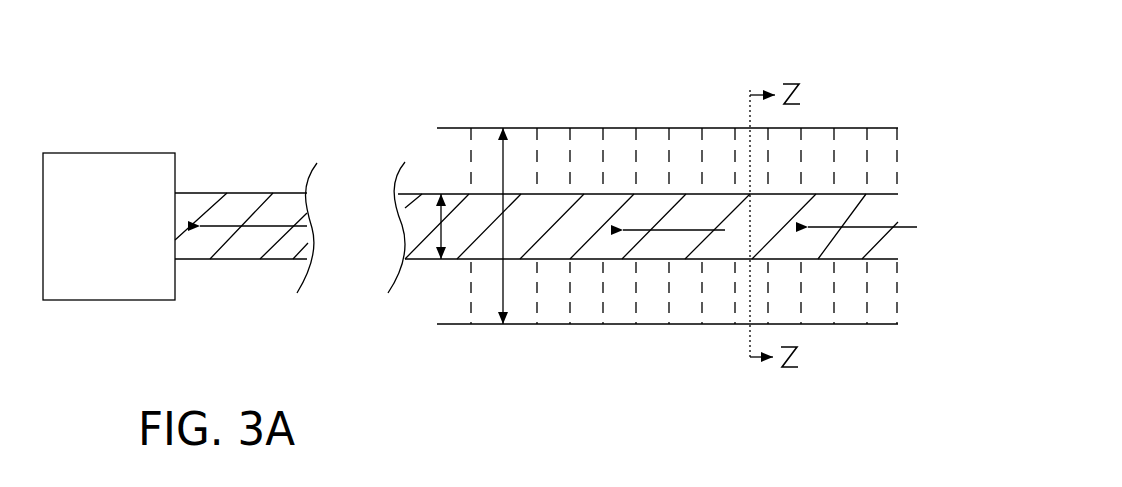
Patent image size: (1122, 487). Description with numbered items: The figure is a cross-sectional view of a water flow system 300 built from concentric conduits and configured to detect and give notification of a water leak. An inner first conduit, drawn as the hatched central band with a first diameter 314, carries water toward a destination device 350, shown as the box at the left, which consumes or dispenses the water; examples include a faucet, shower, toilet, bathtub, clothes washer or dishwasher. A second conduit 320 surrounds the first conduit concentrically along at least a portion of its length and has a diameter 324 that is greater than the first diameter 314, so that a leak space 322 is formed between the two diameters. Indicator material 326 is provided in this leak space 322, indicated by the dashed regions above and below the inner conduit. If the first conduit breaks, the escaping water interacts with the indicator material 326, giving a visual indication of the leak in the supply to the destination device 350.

The water flow system 300 is at (833, 122).
The first diameter 314 is at (438, 213).
The second conduit 320 is at (625, 128).
The leak space 322 is at (718, 148).
The diameter 324 is at (503, 177).
The indicator material 326 is at (867, 158).
The destination device 350 is at (109, 226).